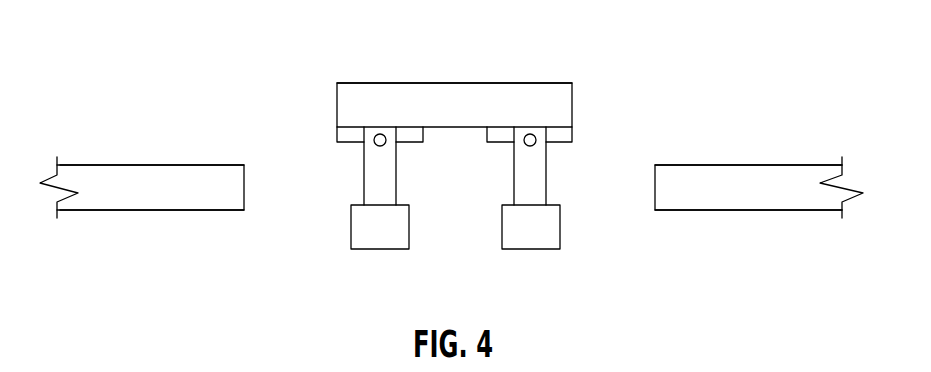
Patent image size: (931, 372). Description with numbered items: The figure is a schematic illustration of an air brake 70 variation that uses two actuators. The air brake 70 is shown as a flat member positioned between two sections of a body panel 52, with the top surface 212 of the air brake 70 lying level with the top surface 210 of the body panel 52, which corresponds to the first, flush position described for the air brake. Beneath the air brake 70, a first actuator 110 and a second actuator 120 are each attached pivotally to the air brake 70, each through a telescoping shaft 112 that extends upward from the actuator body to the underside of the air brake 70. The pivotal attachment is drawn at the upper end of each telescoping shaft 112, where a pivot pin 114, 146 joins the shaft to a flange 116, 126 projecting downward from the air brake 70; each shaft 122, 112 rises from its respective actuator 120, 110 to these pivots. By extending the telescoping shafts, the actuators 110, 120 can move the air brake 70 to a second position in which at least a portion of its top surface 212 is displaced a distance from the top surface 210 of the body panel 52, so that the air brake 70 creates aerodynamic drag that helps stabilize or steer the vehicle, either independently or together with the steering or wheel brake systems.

The body panel 52 is at (150, 165).
The air brake 70 is at (402, 107).
The actuator 110 is at (538, 228).
The telescoping shaft 112 is at (530, 180).
The first pin 114 is at (536, 139).
The first inner flange 116 is at (497, 143).
The actuator 120 is at (372, 240).
The second post 122 is at (378, 185).
The second outer flange 126 is at (337, 134).
The second pin 146 is at (375, 144).
The top surface of the body panel 210 is at (83, 165).
The top surface of the air brake 212 is at (458, 83).